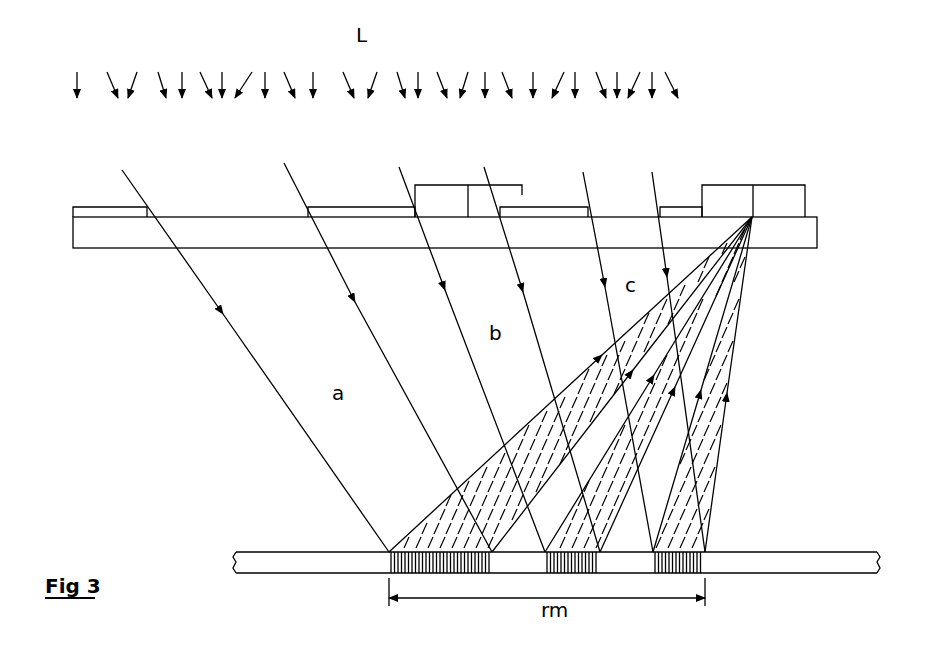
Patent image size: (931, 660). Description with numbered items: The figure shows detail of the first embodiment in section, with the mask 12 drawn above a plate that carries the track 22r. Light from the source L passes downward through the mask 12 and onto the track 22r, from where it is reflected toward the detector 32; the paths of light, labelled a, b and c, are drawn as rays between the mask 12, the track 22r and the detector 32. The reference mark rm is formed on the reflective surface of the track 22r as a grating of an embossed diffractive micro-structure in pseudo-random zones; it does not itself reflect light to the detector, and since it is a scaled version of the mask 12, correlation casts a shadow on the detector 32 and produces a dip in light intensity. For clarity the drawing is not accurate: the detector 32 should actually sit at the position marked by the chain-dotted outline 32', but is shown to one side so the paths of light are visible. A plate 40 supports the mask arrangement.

The mask 12 is at (108, 211).
The chain-dotted outline of detector 32' is at (468, 176).
The detector 32 is at (758, 171).
The transparent plate 40 is at (790, 228).
The track 22r is at (303, 560).